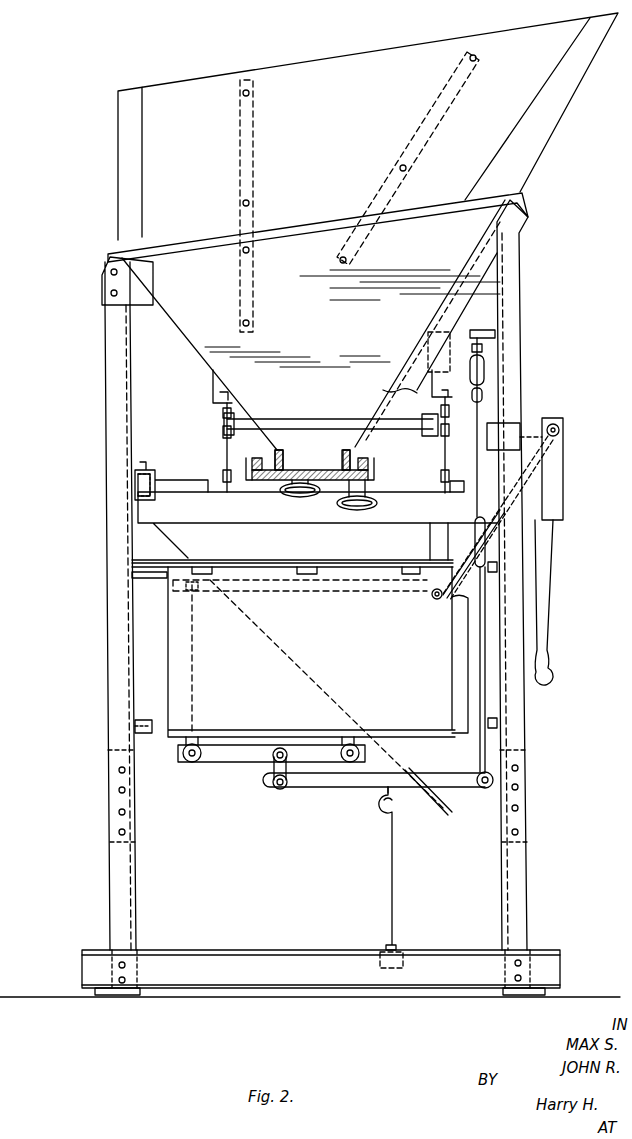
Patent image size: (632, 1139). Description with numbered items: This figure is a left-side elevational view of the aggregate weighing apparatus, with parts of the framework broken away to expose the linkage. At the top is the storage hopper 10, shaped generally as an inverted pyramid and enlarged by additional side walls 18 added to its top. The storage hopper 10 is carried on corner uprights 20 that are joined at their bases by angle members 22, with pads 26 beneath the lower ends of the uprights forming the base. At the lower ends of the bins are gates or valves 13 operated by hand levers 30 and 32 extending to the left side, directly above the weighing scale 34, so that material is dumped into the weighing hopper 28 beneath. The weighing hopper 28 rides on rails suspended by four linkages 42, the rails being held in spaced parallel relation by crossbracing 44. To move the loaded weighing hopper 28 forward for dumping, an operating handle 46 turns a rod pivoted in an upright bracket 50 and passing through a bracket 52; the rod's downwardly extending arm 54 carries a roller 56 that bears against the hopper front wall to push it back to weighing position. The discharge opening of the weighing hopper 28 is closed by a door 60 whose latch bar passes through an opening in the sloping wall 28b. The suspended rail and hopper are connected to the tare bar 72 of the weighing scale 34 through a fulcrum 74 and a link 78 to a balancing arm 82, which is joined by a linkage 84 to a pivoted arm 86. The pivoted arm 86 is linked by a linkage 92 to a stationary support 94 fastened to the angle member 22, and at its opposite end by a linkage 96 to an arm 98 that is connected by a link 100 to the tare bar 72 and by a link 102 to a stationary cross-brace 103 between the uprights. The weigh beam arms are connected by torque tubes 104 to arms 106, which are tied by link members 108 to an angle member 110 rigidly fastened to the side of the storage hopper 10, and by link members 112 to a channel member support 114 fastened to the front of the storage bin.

The storage hopper 10 is at (326, 334).
The gates or valves 13 is at (312, 478).
The additional side walls 18 is at (282, 68).
The corner uprights 20 is at (105, 660).
The angle members 22 is at (270, 950).
The pads 26 is at (120, 1000).
The weighing hopper 28 is at (178, 535).
The sloping wall 28b is at (418, 806).
The hand lever 30 is at (290, 494).
The hand lever 32 is at (378, 503).
The weighing scale 34 is at (318, 652).
The linkages 42 is at (225, 456).
The crossbracing 44 is at (186, 493).
The operating handle 46 is at (551, 623).
The upright bracket 50 is at (563, 468).
The bracket 52 is at (535, 420).
The arm 54 is at (490, 533).
The roller 56 is at (430, 596).
The door 60 is at (447, 814).
The tare bar 72 is at (279, 595).
The fulcrum 74 is at (480, 330).
The link 78 is at (483, 347).
The balancing arm 82 is at (485, 370).
The linkage 84 is at (486, 750).
The pivoted arm 86 is at (321, 790).
The linkage 92 is at (392, 898).
The stationary support 94 is at (404, 965).
The linkage 96 is at (272, 782).
The arm 98 is at (216, 766).
The link 100 is at (196, 677).
The link 102 is at (340, 737).
The stationary cross-brace 103 is at (146, 736).
The torque tubes 104 is at (322, 412).
The arms 106 is at (222, 430).
The link members 108 is at (222, 413).
The angle member 110 is at (213, 389).
The link members 112 is at (449, 410).
The channel member support 114 is at (432, 372).